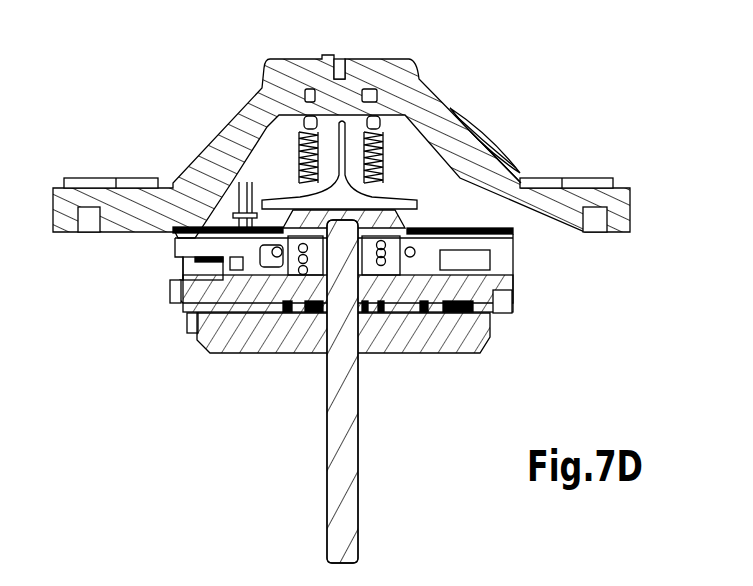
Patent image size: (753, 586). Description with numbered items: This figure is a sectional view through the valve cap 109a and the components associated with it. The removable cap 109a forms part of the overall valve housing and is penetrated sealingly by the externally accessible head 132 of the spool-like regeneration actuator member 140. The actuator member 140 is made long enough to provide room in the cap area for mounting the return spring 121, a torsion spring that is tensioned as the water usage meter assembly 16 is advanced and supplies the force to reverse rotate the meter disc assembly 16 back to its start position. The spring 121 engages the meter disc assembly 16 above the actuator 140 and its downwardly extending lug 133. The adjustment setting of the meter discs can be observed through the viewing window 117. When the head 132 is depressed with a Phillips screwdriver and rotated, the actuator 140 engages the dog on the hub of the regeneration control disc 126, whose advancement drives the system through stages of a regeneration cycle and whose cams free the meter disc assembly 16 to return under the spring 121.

The regeneration actuator member 140 is at (340, 103).
The externally accessible head 132 is at (346, 57).
The valve cap 109a is at (441, 104).
The return spring 121 is at (514, 156).
The viewing window 117 is at (534, 149).
The water usage meter assembly 16 is at (538, 259).
The regeneration control disc 126 is at (514, 293).
The downwardly extending lug 133 is at (244, 358).